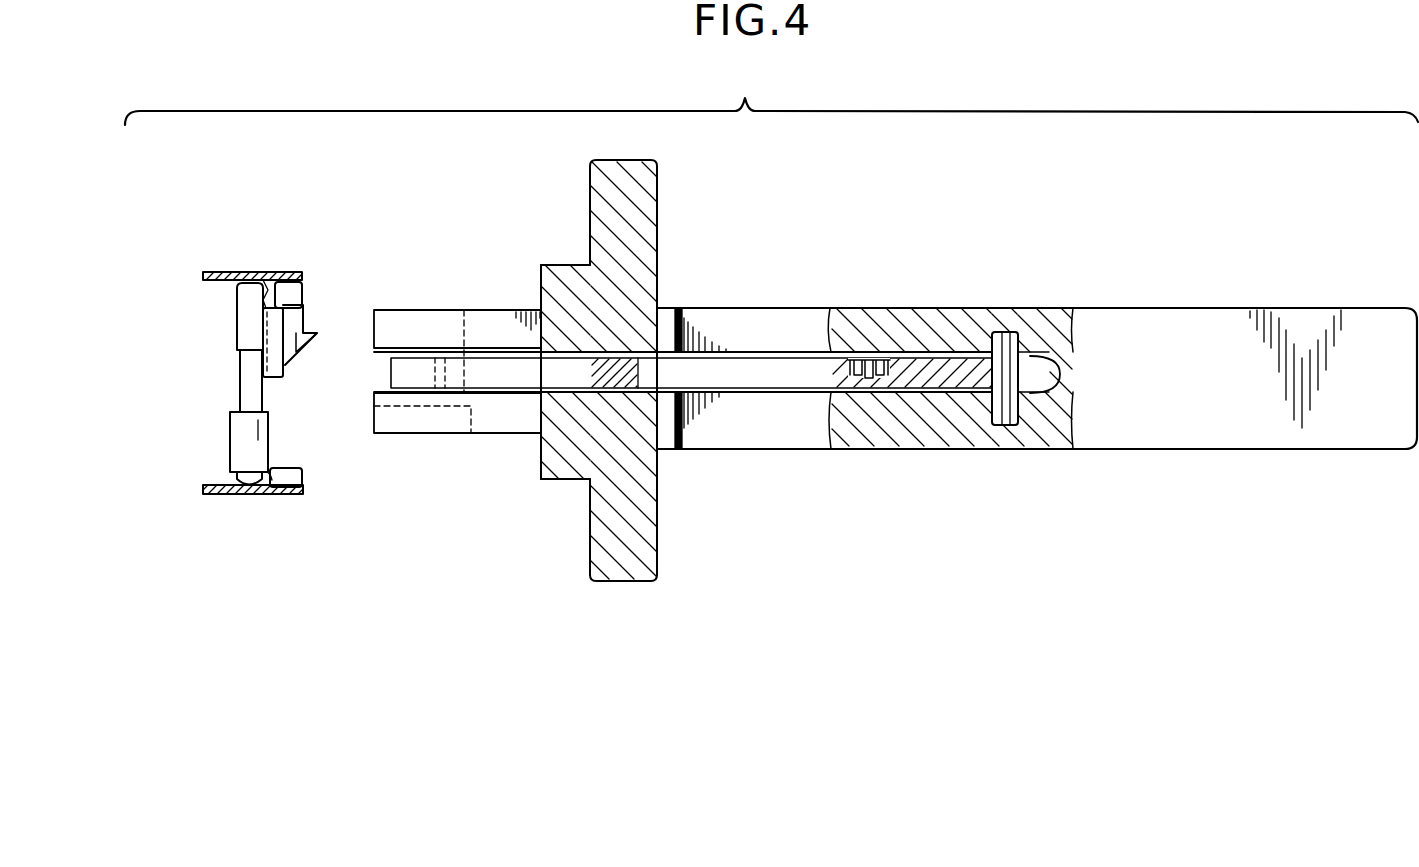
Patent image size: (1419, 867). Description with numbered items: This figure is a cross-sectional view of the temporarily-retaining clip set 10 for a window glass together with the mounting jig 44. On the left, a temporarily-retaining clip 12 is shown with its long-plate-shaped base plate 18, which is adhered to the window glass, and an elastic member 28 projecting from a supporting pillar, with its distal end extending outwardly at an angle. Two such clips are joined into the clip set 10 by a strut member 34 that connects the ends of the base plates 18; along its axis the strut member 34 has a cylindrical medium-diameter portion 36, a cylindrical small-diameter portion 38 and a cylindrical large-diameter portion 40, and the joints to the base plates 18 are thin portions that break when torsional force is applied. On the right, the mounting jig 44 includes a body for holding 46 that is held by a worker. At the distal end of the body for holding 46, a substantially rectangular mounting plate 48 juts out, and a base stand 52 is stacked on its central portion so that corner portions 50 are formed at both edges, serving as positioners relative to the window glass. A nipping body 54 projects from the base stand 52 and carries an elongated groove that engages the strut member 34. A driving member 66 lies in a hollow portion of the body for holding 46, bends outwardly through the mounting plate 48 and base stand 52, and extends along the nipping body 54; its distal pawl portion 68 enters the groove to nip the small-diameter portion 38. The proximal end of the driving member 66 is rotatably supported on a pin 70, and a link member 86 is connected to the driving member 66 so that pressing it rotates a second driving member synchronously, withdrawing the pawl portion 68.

The temporarily-retaining clip set 10 is at (192, 440).
The temporarily-retaining clip 12 is at (262, 270).
The base plate 18 is at (220, 271).
The elastic member 28 is at (301, 318).
The strut member 34 is at (159, 280).
The medium-diameter portion 36 is at (237, 312).
The small-diameter portion 38 is at (242, 373).
The large-diameter portion 40 is at (231, 433).
The mounting jig 44 is at (1175, 265).
The body for holding 46 is at (1200, 449).
The mounting plate 48 is at (645, 219).
The corner portion 50 is at (590, 254).
The base stand 52 is at (539, 280).
The nipping body 54 is at (489, 319).
The driving member 66 is at (931, 389).
The pawl portion 68 is at (414, 376).
The pin 70 is at (1003, 334).
The link member 86 is at (886, 358).